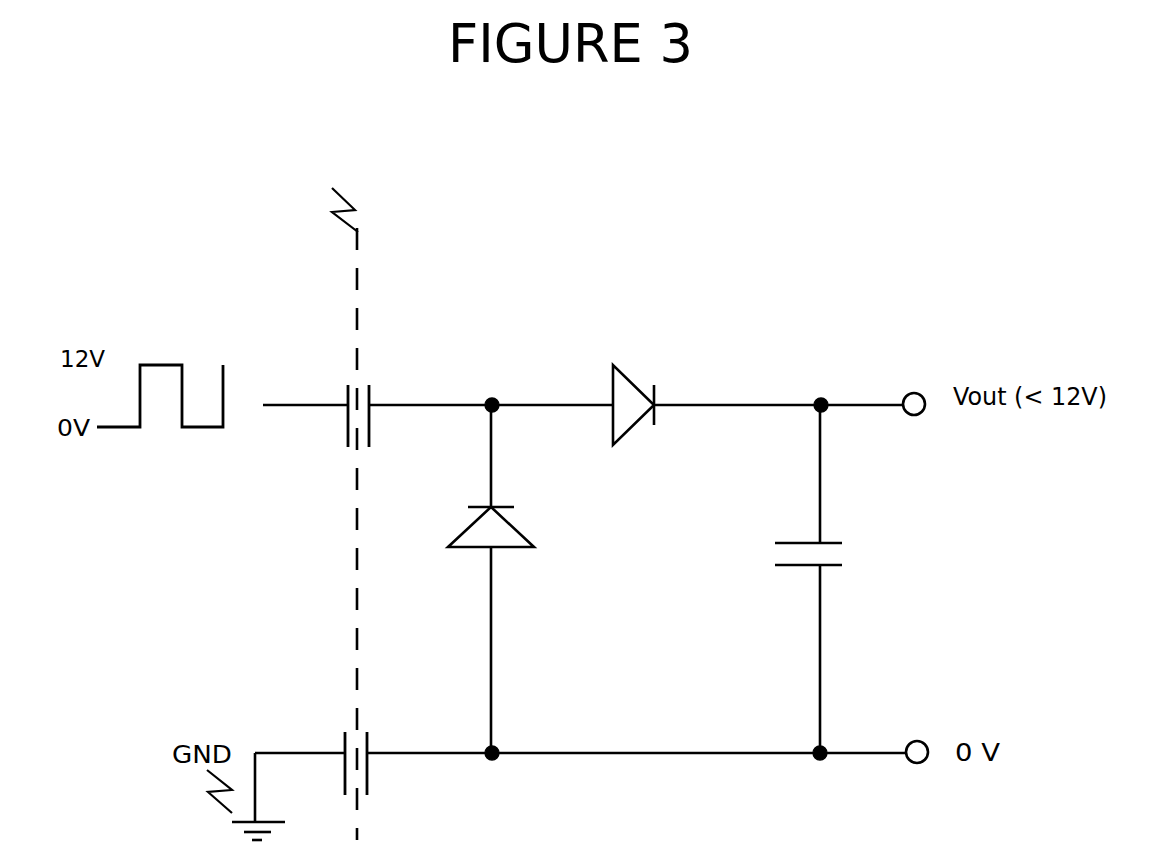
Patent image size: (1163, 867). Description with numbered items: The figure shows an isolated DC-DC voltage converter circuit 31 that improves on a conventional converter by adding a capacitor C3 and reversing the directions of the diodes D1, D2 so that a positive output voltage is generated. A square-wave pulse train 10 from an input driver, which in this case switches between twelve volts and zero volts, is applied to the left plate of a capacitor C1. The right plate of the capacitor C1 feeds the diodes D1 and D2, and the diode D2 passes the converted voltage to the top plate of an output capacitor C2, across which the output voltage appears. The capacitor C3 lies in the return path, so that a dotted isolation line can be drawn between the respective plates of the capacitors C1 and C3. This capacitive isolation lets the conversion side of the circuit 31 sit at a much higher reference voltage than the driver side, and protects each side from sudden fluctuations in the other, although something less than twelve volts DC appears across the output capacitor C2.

The square-wave pulse train 10 is at (162, 360).
The circuit 31 is at (467, 300).
The capacitor C1 is at (348, 385).
The output capacitor C2 is at (777, 543).
The capacitor C3 is at (345, 732).
The diode D1 is at (452, 507).
The diode D2 is at (618, 365).